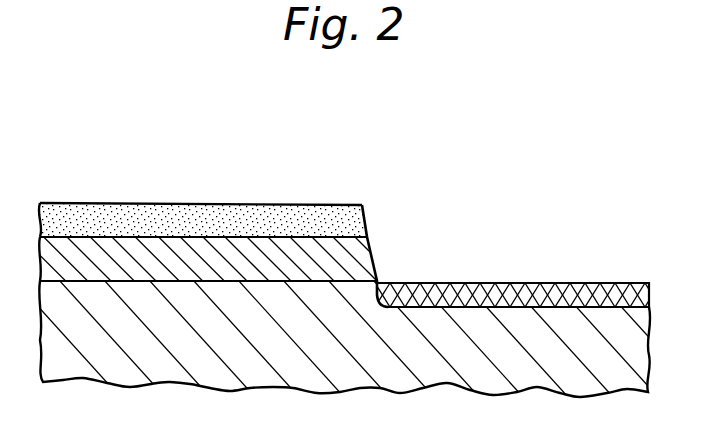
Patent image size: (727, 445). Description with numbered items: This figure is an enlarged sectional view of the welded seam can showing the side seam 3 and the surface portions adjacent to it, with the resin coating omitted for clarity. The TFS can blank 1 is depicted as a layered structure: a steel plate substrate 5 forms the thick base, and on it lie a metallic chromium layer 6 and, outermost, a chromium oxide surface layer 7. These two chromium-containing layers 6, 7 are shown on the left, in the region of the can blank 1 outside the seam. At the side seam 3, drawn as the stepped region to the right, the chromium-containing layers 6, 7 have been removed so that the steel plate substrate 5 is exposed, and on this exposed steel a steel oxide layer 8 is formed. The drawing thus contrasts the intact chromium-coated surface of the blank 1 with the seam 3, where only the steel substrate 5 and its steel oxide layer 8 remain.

The TFS can blank 1 is at (35, 147).
The side seam 3 is at (655, 153).
The steel plate substrate 5 is at (530, 372).
The metallic chromium layer 6 is at (50, 253).
The chromium oxide surface layer 7 is at (150, 213).
The steel oxide layer 8 is at (533, 290).